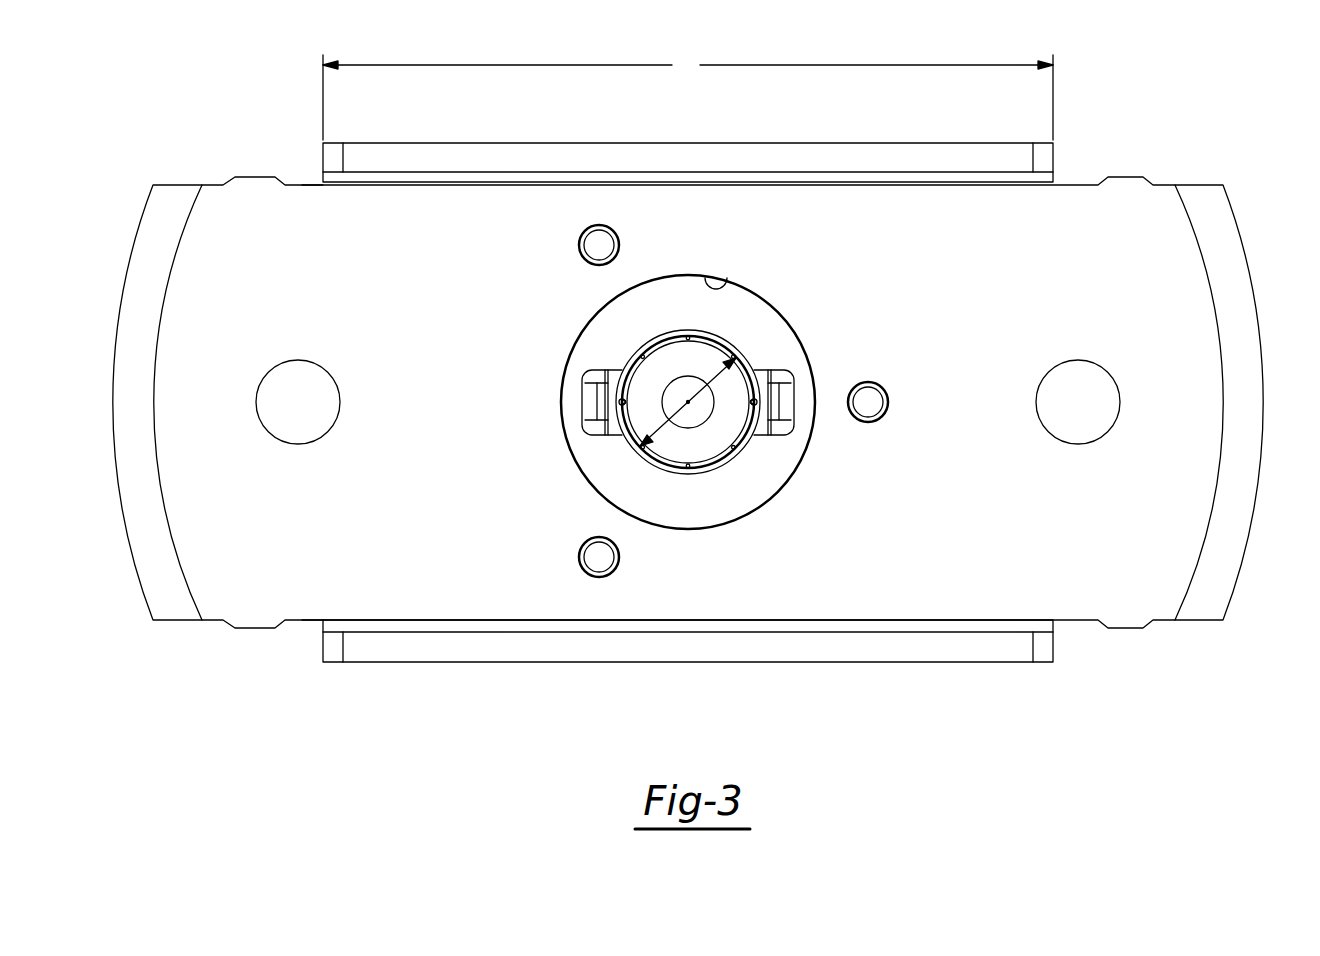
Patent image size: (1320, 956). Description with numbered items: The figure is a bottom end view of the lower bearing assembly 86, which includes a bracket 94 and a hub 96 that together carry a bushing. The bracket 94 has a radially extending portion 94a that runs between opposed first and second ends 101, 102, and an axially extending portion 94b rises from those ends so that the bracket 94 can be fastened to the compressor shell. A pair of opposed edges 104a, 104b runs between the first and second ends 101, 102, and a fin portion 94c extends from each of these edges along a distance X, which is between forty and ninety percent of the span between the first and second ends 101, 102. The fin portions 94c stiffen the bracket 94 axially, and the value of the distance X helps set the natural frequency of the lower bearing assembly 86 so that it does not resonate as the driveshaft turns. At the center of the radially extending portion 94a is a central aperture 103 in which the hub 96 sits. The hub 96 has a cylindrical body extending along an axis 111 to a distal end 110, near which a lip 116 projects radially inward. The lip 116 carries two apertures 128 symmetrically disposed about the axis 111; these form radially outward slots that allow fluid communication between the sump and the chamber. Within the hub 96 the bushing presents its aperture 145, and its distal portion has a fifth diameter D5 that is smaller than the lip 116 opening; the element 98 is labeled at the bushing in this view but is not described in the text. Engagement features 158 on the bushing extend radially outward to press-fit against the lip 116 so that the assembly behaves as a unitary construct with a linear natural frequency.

The lower bearing assembly 86 is at (1212, 133).
The bracket 94 is at (182, 157).
The radially extending portion 94a is at (1060, 225).
The axially extending portion 94b is at (118, 330).
The fin portion 94c is at (425, 143).
The hub 96 is at (594, 340).
The bearing 98 is at (717, 352).
The first end 101 is at (165, 313).
The second end 102 is at (1215, 317).
The central aperture 103 is at (728, 288).
The edge 104a is at (302, 620).
The edge 104b is at (302, 185).
The distal end 110 is at (735, 502).
The axis 111 is at (688, 404).
The lip 116 is at (612, 455).
The aperture 128 is at (598, 411).
The aperture 145 is at (712, 410).
The engagement feature 158 is at (620, 402).
The fifth diameter D5 is at (686, 402).
The distance X is at (688, 97).